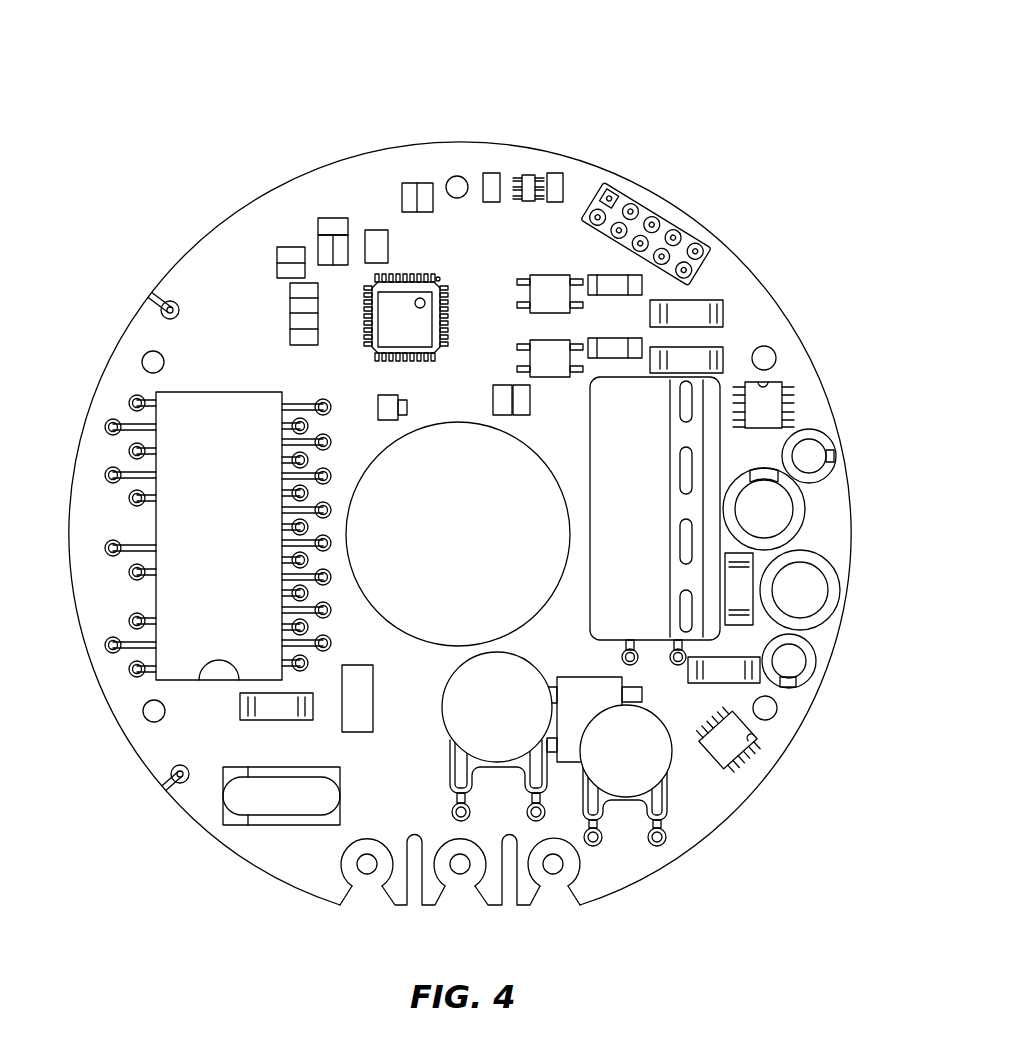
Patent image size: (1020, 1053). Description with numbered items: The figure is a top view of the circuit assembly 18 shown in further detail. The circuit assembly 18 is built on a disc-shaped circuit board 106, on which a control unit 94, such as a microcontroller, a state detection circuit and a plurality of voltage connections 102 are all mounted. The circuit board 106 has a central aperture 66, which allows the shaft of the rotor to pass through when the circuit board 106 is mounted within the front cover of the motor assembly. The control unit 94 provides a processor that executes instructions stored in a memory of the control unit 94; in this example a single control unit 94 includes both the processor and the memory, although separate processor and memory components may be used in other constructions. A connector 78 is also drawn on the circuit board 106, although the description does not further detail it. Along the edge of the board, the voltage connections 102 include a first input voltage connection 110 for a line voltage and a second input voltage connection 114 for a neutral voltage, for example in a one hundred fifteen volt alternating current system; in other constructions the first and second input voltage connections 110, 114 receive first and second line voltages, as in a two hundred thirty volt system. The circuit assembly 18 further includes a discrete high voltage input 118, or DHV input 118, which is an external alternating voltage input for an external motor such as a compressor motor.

The circuit assembly 18 is at (158, 98).
The circuit board 106 is at (220, 250).
The control unit 94 is at (405, 297).
The connector 78 is at (583, 260).
The central aperture 66 is at (543, 466).
The voltage connections 102 is at (452, 935).
The first input voltage connection 110 is at (565, 866).
The second input voltage connection 114 is at (470, 878).
The discrete high voltage input 118 is at (350, 867).